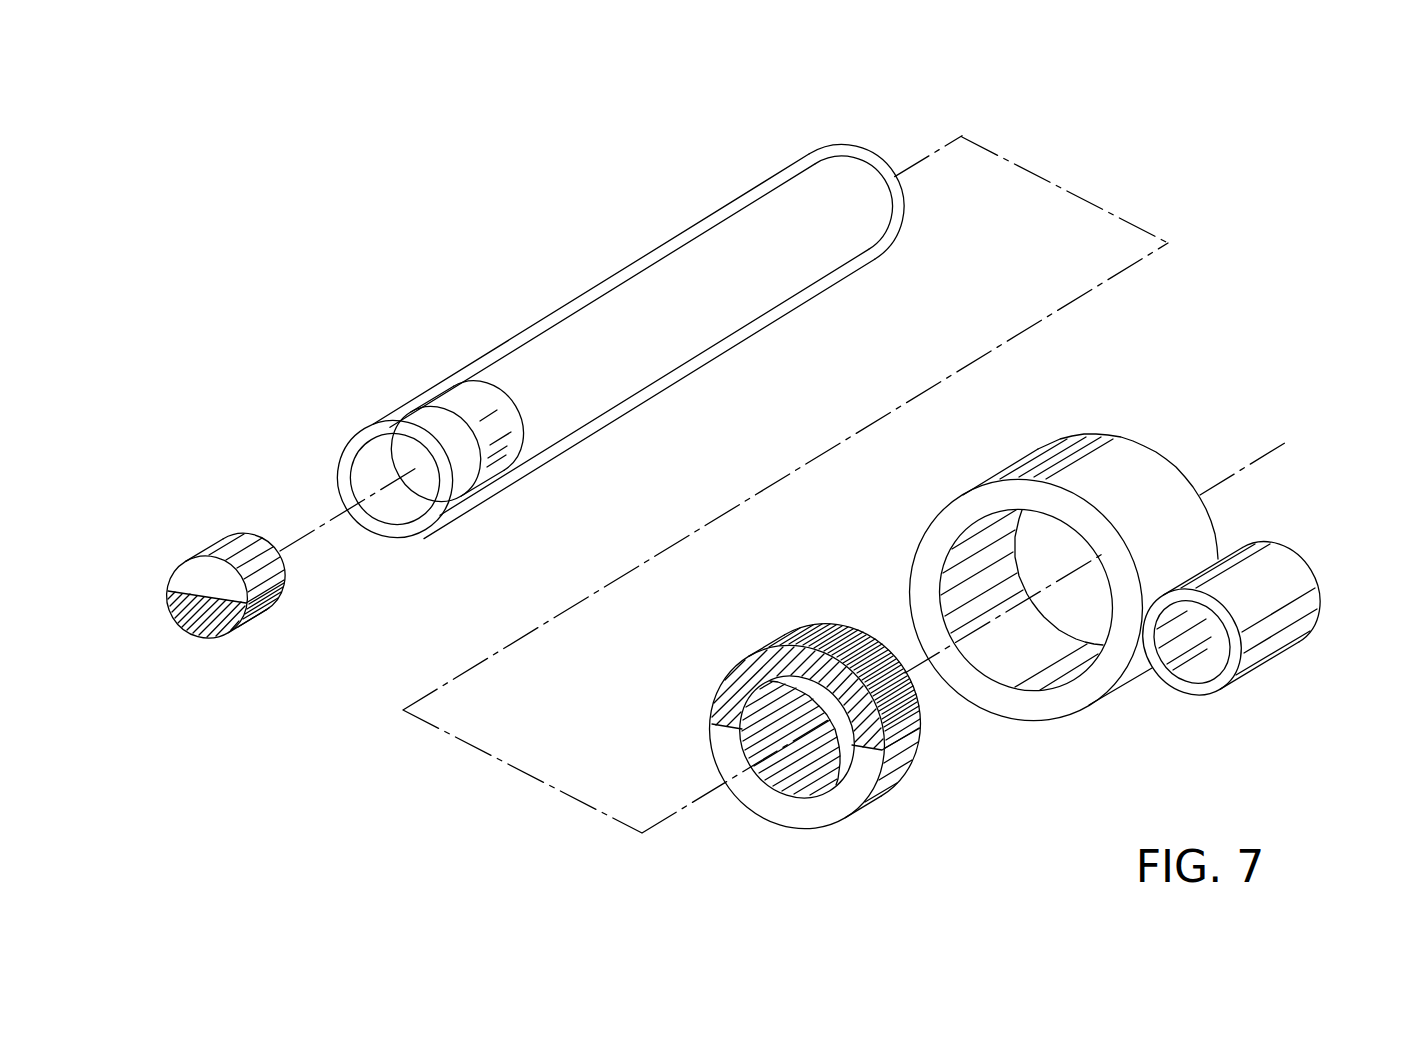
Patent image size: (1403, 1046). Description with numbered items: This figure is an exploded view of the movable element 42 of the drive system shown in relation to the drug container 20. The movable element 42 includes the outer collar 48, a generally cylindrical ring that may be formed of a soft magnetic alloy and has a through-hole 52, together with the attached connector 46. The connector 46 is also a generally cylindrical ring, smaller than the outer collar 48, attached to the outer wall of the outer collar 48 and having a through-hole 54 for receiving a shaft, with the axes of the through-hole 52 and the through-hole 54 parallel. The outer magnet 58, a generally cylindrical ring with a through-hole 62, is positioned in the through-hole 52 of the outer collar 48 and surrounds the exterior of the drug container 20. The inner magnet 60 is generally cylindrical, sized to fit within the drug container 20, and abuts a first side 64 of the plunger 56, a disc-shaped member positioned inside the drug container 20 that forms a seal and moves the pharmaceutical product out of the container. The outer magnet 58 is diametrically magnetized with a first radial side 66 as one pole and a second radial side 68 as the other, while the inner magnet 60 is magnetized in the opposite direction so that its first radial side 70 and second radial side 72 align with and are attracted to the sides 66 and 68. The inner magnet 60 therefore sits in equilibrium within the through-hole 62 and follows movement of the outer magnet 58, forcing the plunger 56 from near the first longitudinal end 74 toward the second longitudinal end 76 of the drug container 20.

The drug container 20 is at (638, 314).
The second longitudinal end 76 is at (847, 177).
The first longitudinal end 74 is at (352, 447).
The plunger 56 is at (428, 450).
The first side 64 is at (464, 439).
The inner magnet 60 is at (200, 571).
The first radial side 70 is at (190, 567).
The second radial side 72 is at (198, 620).
The movable element 42 is at (293, 662).
The outer magnet 58 is at (823, 730).
The first radial side 66 is at (818, 638).
The second radial side 68 is at (755, 795).
The through-hole 62 is at (828, 760).
The outer collar 48 is at (1041, 575).
The through-hole 52 is at (1072, 615).
The connector 46 is at (1253, 645).
The through-hole 54 is at (1207, 665).